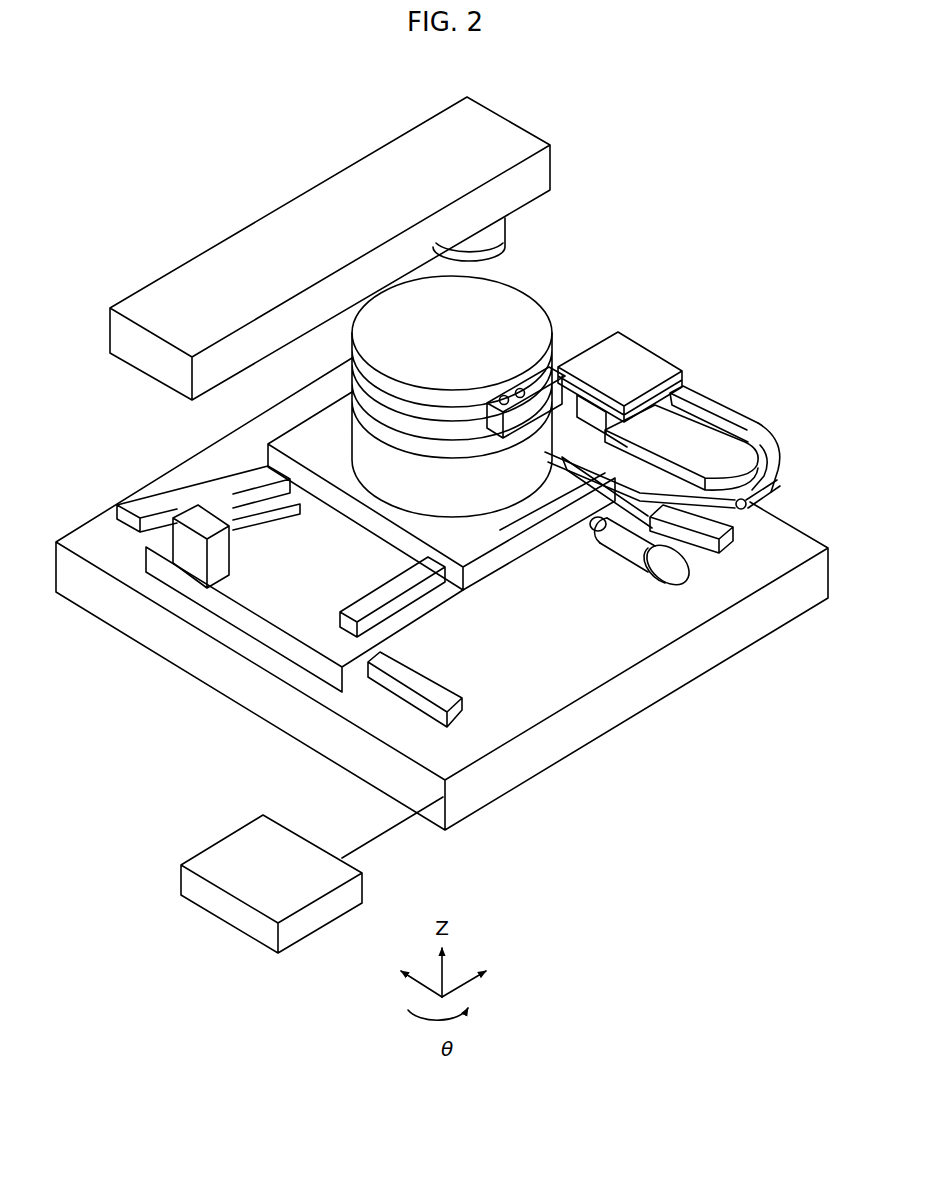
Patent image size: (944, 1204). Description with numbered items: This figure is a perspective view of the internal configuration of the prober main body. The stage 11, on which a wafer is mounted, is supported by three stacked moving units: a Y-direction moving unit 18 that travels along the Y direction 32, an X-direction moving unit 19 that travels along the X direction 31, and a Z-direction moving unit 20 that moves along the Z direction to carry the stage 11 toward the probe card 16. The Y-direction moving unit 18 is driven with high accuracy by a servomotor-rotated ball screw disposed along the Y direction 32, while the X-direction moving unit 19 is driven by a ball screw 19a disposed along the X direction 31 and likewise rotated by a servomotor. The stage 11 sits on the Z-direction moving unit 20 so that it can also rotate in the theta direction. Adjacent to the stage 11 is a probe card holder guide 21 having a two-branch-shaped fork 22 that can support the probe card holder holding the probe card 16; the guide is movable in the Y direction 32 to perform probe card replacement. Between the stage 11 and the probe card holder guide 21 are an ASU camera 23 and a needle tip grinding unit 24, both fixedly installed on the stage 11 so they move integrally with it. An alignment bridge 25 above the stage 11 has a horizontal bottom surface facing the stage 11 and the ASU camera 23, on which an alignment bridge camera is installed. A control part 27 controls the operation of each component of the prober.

The stage 11 is at (513, 307).
The probe card 16 is at (492, 233).
The Y-direction moving unit 18 is at (280, 612).
The X-direction moving unit 19 is at (313, 443).
The ball screw 19a is at (233, 495).
The Z-direction moving unit 20 is at (355, 409).
The probe card holder guide 21 is at (752, 376).
The two-branch-shaped fork 22 is at (695, 397).
The ASU camera 23 is at (557, 365).
The needle tip grinding unit 24 is at (660, 326).
The alignment bridge 25 is at (505, 133).
The control part 27 is at (257, 868).
The X direction 31 is at (468, 982).
The Y direction 32 is at (417, 983).